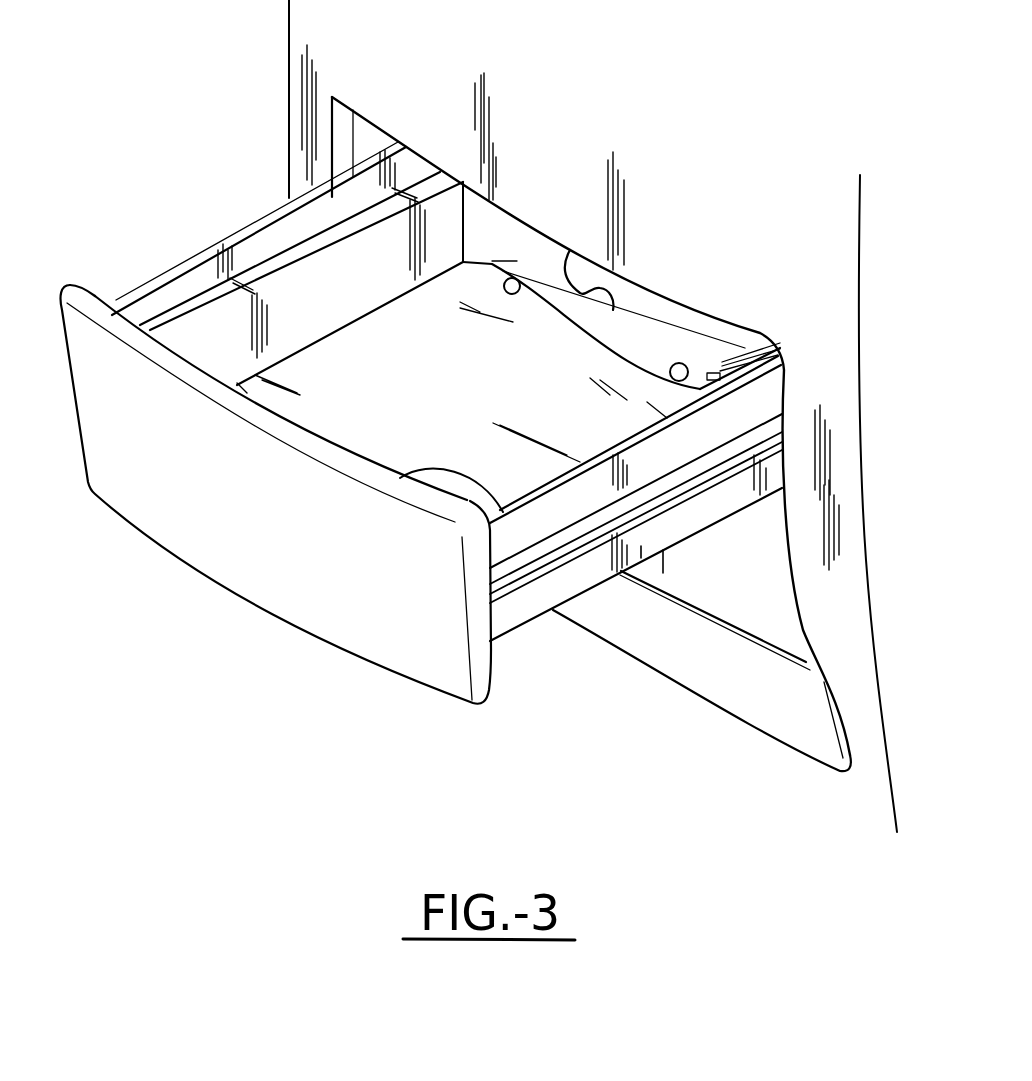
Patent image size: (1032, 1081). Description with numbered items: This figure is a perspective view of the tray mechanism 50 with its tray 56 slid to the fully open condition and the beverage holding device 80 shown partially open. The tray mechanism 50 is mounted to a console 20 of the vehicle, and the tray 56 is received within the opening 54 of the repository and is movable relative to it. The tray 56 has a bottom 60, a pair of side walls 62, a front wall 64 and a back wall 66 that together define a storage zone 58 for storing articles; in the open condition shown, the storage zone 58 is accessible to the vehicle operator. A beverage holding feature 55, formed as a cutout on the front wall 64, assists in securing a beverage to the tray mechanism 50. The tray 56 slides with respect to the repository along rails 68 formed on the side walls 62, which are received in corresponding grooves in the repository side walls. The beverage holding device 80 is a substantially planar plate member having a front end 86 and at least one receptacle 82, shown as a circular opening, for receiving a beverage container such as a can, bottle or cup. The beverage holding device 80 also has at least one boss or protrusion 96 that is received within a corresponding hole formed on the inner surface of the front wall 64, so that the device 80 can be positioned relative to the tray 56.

The console 20 is at (838, 268).
The tray mechanism 50 is at (158, 102).
The opening 54 is at (781, 595).
The beverage holding feature 55 is at (450, 484).
The tray 56 is at (72, 292).
The storage zone 58 is at (207, 333).
The bottom 60 is at (416, 411).
The side wall 62 is at (265, 230).
The front wall 64 is at (202, 547).
The back wall 66 is at (510, 240).
The rail 68 is at (768, 442).
The beverage holding device 80 is at (493, 263).
The receptacle 82 is at (588, 296).
The front end 86 is at (595, 330).
The protrusion 96 is at (512, 296).